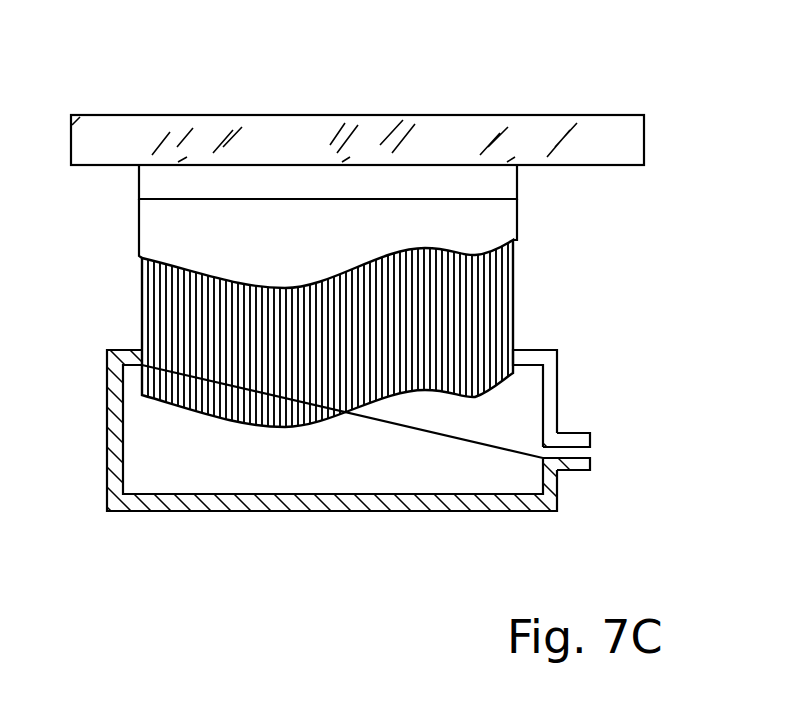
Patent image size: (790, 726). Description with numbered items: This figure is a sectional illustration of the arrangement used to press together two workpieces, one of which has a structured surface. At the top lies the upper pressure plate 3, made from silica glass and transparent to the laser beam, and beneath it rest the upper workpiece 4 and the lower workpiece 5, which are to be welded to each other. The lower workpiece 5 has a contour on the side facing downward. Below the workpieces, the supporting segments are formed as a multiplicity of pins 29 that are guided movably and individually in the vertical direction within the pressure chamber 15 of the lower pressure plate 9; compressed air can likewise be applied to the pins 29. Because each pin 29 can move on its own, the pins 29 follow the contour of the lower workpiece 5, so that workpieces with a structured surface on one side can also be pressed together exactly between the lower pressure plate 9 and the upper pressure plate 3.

The upper pressure plate 3 is at (292, 132).
The upper workpiece 4 is at (379, 195).
The lower workpiece 5 is at (467, 218).
The pins 29 is at (517, 268).
The pressure chamber 15 is at (520, 417).
The lower pressure plate 9 is at (555, 493).